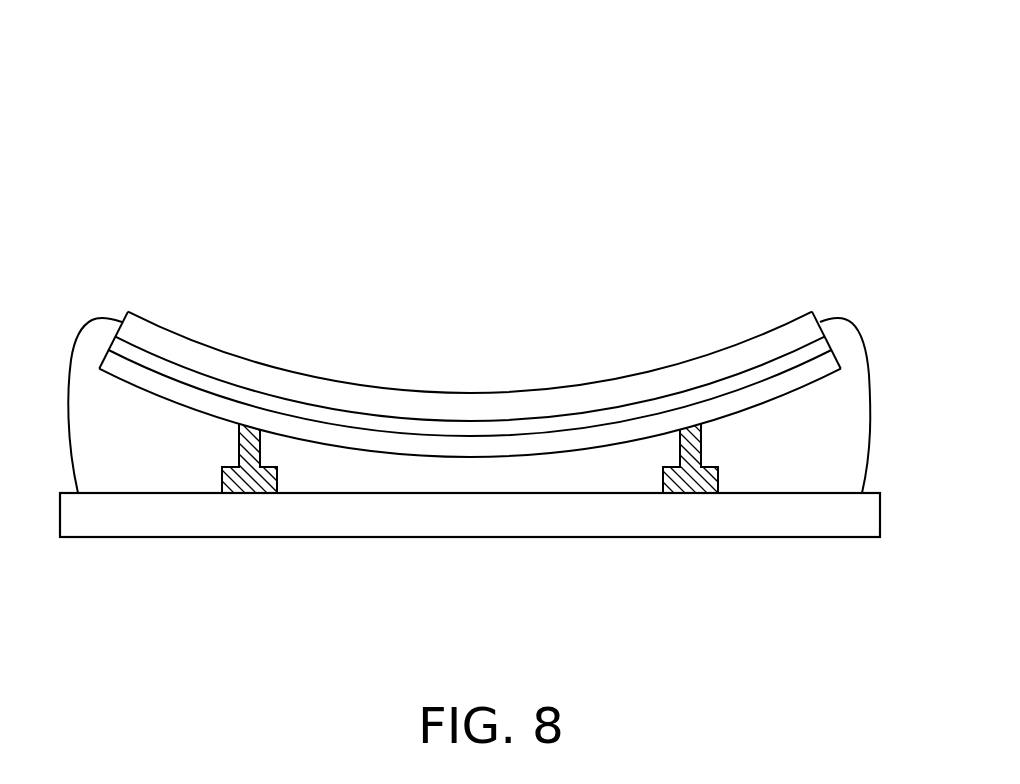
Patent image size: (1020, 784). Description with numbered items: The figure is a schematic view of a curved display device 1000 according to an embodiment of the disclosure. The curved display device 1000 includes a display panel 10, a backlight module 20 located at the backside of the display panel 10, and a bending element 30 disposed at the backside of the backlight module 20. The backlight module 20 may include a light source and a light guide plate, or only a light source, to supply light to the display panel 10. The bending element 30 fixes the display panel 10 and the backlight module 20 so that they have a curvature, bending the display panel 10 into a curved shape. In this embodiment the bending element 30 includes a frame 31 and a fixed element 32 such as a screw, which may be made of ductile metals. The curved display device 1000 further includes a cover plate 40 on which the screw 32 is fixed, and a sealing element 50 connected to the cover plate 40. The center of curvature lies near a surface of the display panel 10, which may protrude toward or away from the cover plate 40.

The display panel 10 is at (737, 363).
The backlight module 20 is at (822, 347).
The bending element 30 is at (328, 48).
The frame 31 is at (893, 342).
The fixed element 32 is at (748, 455).
The cover plate 40 is at (867, 518).
The sealing element 50 is at (840, 443).
The curved display device 1000 is at (898, 652).